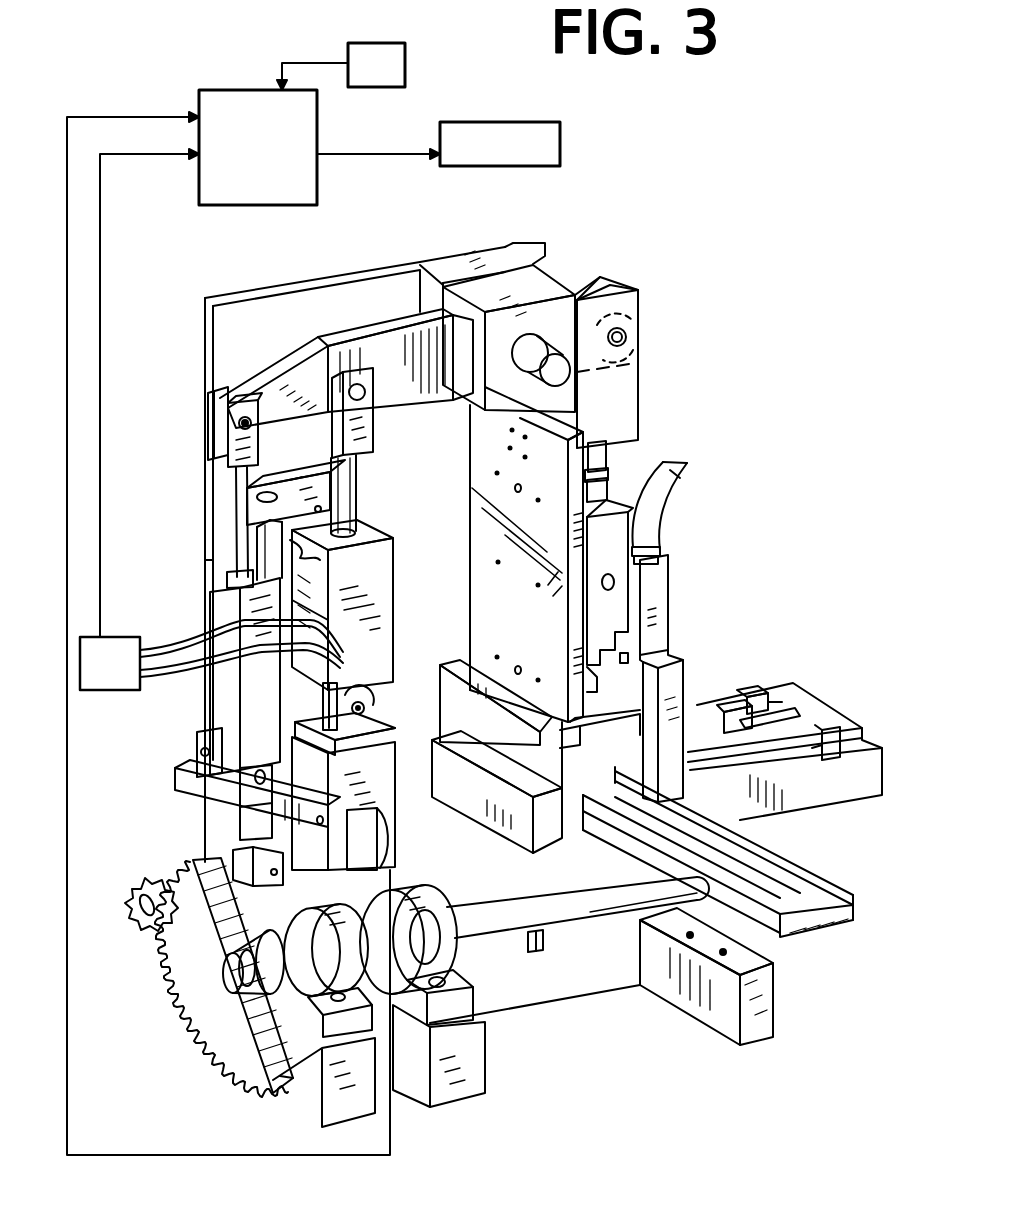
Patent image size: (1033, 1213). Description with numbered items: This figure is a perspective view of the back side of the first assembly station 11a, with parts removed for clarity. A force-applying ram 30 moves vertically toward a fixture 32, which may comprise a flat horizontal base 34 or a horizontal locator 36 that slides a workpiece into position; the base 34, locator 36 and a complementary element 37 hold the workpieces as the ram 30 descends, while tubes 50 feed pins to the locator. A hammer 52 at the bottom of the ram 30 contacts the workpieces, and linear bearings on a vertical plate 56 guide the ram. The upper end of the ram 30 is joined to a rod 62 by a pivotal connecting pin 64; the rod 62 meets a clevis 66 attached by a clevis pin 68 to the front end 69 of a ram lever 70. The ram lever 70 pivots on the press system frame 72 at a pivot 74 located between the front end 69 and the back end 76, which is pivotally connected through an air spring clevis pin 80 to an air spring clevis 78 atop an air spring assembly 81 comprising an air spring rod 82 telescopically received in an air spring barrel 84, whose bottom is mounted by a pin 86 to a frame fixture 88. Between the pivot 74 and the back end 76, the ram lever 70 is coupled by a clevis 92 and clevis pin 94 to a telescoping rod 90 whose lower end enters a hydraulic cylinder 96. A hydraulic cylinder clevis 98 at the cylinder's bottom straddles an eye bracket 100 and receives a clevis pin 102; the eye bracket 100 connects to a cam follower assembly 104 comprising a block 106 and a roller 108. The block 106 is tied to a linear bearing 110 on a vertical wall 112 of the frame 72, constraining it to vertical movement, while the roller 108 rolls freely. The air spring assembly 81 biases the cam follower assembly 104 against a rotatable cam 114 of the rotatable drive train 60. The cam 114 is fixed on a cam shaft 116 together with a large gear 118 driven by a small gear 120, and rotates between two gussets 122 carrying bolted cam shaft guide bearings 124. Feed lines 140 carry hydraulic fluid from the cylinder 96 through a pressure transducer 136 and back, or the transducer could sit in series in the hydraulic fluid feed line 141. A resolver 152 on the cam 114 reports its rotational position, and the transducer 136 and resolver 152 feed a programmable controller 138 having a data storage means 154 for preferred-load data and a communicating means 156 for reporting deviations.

The ram 30 is at (600, 612).
The fixture 32 is at (575, 750).
The base 34 is at (570, 738).
The horizontal locator 36 is at (697, 712).
The complementary element 37 is at (583, 775).
The tubes 50 is at (685, 472).
The hammer 52 is at (585, 688).
The vertical plate 56 is at (483, 452).
The rotatable drive train 60 is at (234, 980).
The rod 62 is at (605, 482).
The pivotal connecting pin 64 is at (663, 585).
The clevis 66 is at (630, 397).
The clevis pin 68 is at (625, 338).
The front end 69 is at (615, 285).
The ram lever 70 is at (385, 330).
The press system frame 72 is at (447, 265).
The pivot 74 is at (555, 360).
The back end 76 is at (210, 405).
The air spring clevis 78 is at (215, 448).
The air spring clevis pin 80 is at (240, 425).
The air spring assembly 81 is at (225, 527).
The air spring rod 82 is at (233, 496).
The air spring barrel 84 is at (240, 722).
The pin 86 is at (190, 770).
The frame fixture 88 is at (200, 790).
The telescoping rod 90 is at (357, 507).
The clevis 92 is at (372, 450).
The clevis pin 94 is at (365, 396).
The hydraulic cylinder 96 is at (388, 597).
The hydraulic cylinder clevis 98 is at (365, 707).
The eye bracket 100 is at (415, 712).
The clevis pin 102 is at (325, 712).
The cam follower assembly 104 is at (398, 775).
The block 106 is at (388, 822).
The roller 108 is at (385, 855).
The linear bearing 110 is at (280, 485).
The first assembly station 11a is at (207, 566).
The vertical wall 112 is at (207, 340).
The rotatable cam 114 is at (480, 897).
The cam shaft 116 is at (545, 938).
The large gear 118 is at (185, 983).
The small gear 120 is at (130, 896).
The gussets 122 is at (455, 998).
The cam shaft guide bearings 124 is at (240, 960).
The pressure transducer 136 is at (93, 677).
The programmable controller 138 is at (240, 158).
The feed lines 140 is at (330, 647).
The hydraulic fluid feed line 141 is at (310, 558).
The resolver 152 is at (385, 958).
The data storage means 154 is at (341, 66).
The communicating means 156 is at (438, 144).